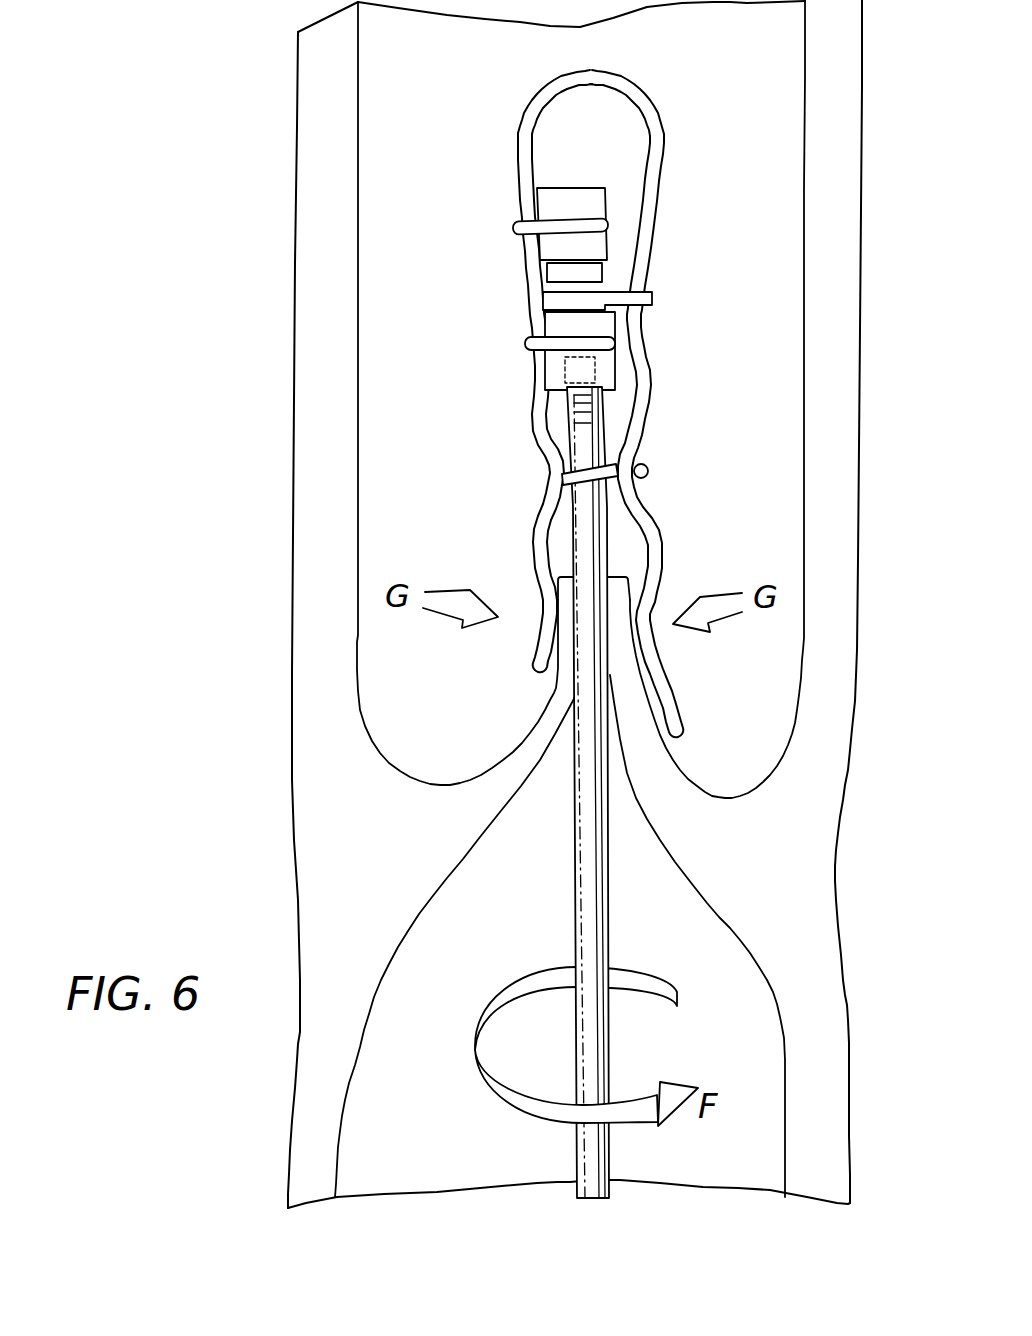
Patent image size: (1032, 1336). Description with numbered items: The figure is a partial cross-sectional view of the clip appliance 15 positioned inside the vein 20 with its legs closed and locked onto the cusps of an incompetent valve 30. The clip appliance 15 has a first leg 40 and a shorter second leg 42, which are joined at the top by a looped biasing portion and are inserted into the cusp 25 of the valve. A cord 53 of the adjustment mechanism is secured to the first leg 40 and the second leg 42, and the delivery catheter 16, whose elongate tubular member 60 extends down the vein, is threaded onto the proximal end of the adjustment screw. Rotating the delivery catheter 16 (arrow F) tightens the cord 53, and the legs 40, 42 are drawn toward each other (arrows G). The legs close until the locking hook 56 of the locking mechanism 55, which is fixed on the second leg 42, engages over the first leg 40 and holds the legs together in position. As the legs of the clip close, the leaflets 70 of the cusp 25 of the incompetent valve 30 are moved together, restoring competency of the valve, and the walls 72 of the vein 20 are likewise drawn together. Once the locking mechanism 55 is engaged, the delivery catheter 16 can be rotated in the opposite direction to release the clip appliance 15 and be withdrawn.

The clip appliance 15 is at (482, 153).
The delivery catheter 16 is at (556, 916).
The vein 20 is at (850, 146).
The cusp 25 is at (660, 770).
The incompetent valve 30 is at (396, 700).
The first leg 40 is at (660, 410).
The second leg 42 is at (535, 425).
The cord 53 is at (573, 300).
The locking mechanism 55 is at (528, 484).
The locking hook 56 is at (649, 471).
The elongate tubular member 60 is at (585, 808).
The leaflets 70 is at (618, 661).
The walls 72 is at (298, 640).